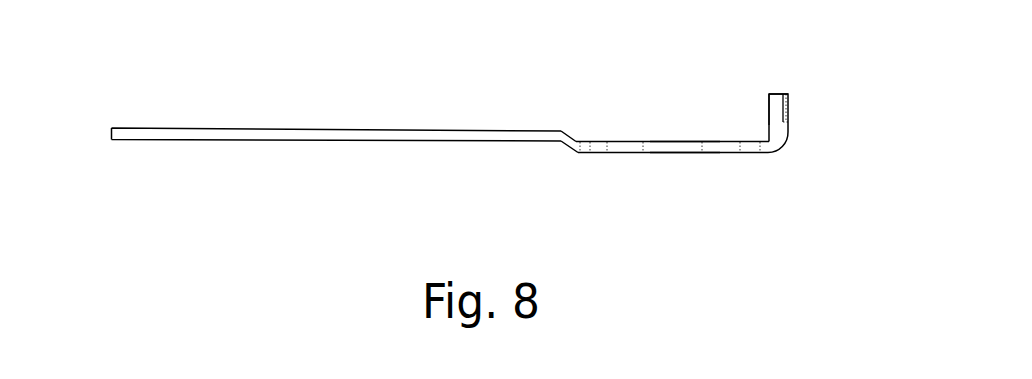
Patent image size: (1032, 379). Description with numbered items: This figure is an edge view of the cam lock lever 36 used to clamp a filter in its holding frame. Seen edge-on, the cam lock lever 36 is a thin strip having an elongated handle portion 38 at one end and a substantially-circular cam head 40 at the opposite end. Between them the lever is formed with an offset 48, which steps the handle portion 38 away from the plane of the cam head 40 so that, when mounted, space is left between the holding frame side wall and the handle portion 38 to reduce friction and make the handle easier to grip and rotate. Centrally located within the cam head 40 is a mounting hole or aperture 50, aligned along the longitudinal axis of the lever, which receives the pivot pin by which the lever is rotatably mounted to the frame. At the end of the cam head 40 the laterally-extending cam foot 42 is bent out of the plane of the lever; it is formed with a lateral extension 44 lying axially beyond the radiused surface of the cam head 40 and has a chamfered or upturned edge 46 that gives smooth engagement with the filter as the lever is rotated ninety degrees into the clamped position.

The cam lock lever 36 is at (203, 166).
The elongated handle portion 38 is at (217, 133).
The cam head 40 is at (608, 153).
The cam foot 42 is at (802, 123).
The lateral extension 44 is at (787, 122).
The chamfered or upturned edge 46 is at (777, 110).
The offset 48 is at (574, 140).
The mounting hole or aperture 50 is at (668, 147).